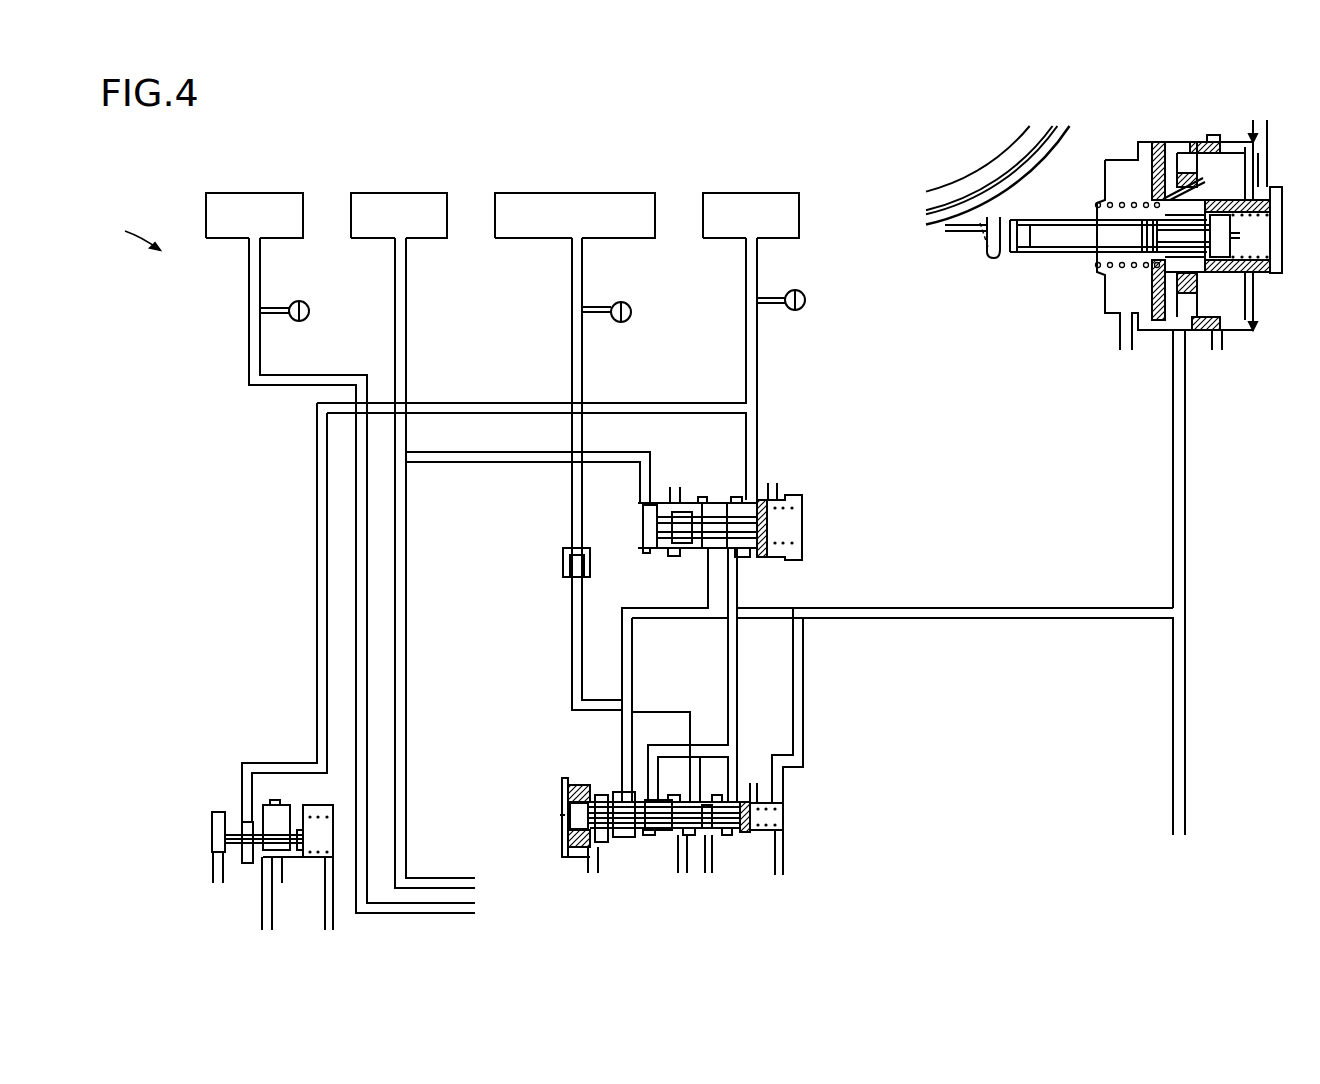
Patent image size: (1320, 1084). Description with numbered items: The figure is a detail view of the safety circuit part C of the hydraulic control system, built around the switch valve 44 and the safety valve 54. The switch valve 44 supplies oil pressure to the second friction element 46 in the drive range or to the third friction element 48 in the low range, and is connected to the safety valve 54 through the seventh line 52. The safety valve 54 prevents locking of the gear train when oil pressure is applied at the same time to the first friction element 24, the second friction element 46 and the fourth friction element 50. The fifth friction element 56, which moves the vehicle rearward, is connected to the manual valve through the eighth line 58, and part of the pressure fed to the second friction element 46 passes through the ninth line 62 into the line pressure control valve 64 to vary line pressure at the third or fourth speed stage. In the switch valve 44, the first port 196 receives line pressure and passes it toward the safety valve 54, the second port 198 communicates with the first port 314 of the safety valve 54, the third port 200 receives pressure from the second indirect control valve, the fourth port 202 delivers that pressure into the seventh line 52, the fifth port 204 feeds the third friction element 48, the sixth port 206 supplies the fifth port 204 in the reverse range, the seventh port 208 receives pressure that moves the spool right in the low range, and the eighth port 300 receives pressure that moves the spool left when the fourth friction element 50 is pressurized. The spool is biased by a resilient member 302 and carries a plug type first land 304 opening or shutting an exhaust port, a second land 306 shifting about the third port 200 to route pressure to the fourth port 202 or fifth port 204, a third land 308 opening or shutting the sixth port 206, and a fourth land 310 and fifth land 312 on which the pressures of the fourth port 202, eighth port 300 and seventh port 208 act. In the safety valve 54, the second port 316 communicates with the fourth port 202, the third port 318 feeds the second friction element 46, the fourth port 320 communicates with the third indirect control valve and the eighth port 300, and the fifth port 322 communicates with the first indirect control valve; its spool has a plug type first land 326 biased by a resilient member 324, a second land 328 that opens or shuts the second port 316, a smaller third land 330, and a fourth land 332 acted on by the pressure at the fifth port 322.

The safety circuit part C is at (131, 233).
The fifth friction element 56 is at (257, 190).
The first friction element 24 is at (401, 190).
The third friction element 48 is at (577, 190).
The second friction element 46 is at (753, 190).
The eighth line 58 is at (356, 518).
The ninth line 62 is at (318, 579).
The line pressure control valve 64 is at (208, 834).
The fourth friction element 50 is at (1088, 320).
The seventh line 52 is at (728, 646).
The safety valve 54 is at (732, 617).
The switch valve 44 is at (696, 789).
The third port 318 is at (752, 498).
The fifth port 322 is at (645, 503).
The fourth land 332 is at (643, 522).
The third land 330 is at (680, 541).
The second land 328 is at (717, 503).
The first land 326 is at (785, 500).
The resilient member 324 is at (802, 510).
The fourth port 320 is at (708, 555).
The second port 316 is at (737, 553).
The first port 314 is at (800, 557).
The fifth land 312 is at (592, 782).
The eighth port 300 is at (620, 782).
The fourth land 310 is at (627, 848).
The seventh port 208 is at (592, 850).
The third land 308 is at (656, 745).
The sixth port 206 is at (670, 848).
The second land 306 is at (705, 848).
The fifth port 204 is at (698, 790).
The third port 200 is at (718, 848).
The fourth port 202 is at (741, 768).
The first land 304 is at (760, 833).
The resilient member 302 is at (788, 828).
The second port 198 is at (785, 798).
The first port 196 is at (784, 843).